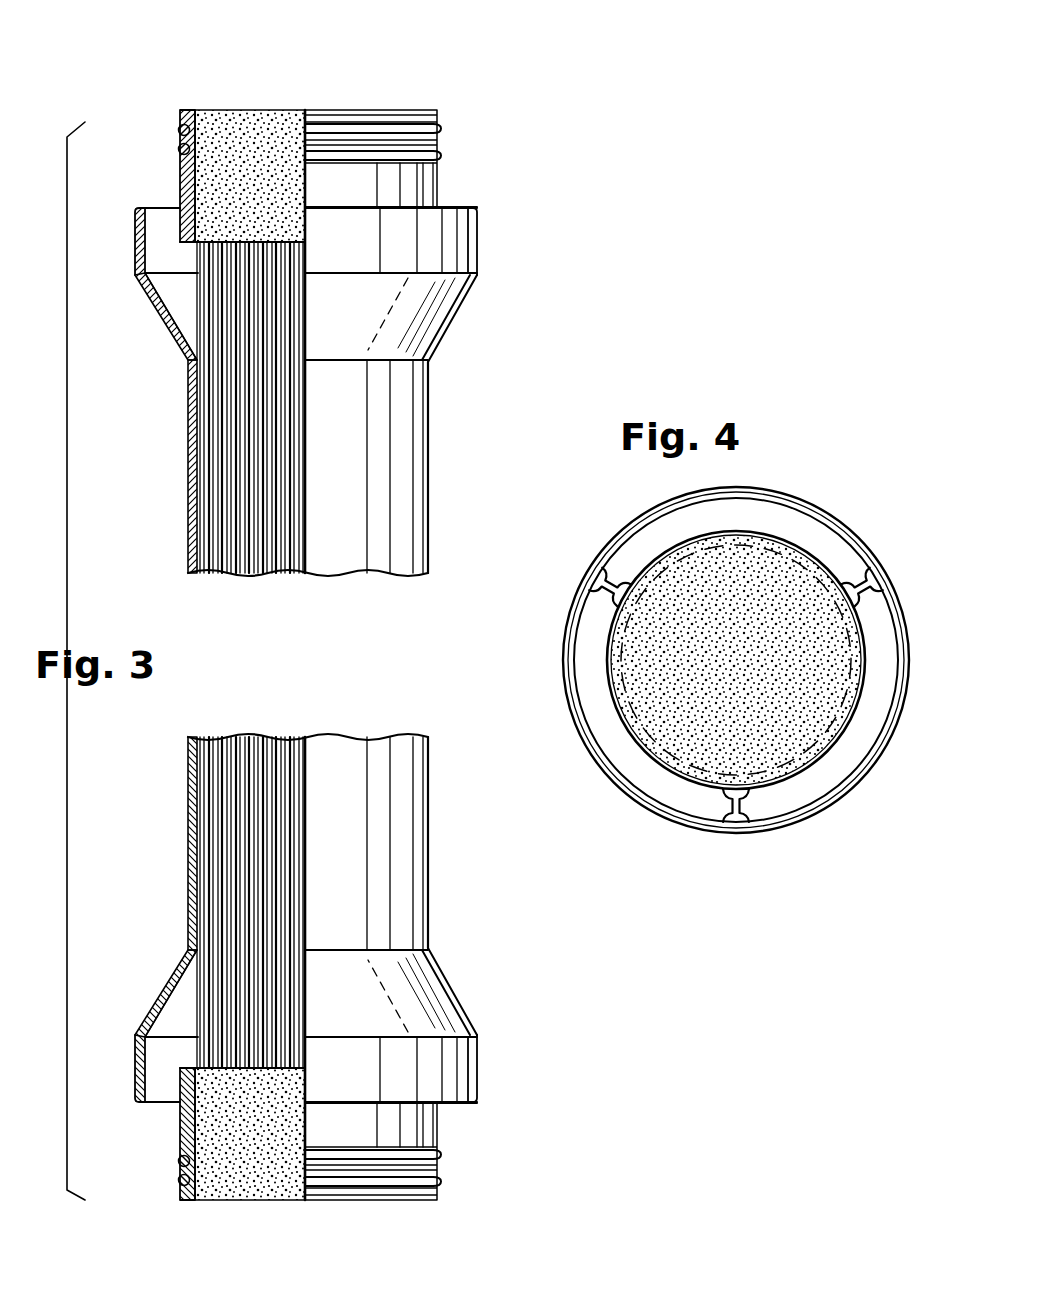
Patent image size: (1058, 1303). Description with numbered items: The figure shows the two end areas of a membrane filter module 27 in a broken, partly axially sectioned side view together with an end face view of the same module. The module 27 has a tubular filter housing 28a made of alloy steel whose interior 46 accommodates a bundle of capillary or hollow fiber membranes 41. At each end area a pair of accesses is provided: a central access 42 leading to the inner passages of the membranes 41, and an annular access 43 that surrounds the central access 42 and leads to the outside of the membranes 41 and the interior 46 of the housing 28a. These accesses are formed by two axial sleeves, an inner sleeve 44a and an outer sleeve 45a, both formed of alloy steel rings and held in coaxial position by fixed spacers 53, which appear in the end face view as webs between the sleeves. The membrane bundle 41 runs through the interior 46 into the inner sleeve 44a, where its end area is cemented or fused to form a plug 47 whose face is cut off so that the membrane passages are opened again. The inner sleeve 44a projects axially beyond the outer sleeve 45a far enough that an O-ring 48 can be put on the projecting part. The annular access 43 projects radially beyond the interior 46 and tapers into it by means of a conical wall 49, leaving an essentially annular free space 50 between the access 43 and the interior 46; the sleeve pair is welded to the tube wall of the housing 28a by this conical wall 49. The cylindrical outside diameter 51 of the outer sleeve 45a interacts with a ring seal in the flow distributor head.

In FIG. 3, the membrane filter module 27 is at (343, 597).
In FIG. 3, the tubular filter housing 28a is at (434, 420).
In FIG. 4, the tubular filter housing 28a is at (772, 486).
In FIG. 3, the capillary or hollow fiber membranes 41 is at (236, 575).
In FIG. 3, the central access 42 is at (366, 106).
In FIG. 4, the central access 42 is at (690, 575).
In FIG. 3, the annular access 43 is at (160, 207).
In FIG. 4, the annular access 43 is at (808, 536).
In FIG. 3, the inner sleeve 44a is at (432, 172).
In FIG. 4, the inner sleeve 44a is at (830, 745).
In FIG. 3, the outer sleeve 45a is at (472, 216).
In FIG. 4, the outer sleeve 45a is at (562, 694).
In FIG. 3, the interior of the tubular filter housing 46 is at (192, 460).
In FIG. 3, the plug 47 is at (230, 124).
In FIG. 4, the plug 47 is at (702, 748).
In FIG. 3, the O-ring 48 is at (178, 149).
In FIG. 3, the conical wall 49 is at (178, 342).
In FIG. 3, the annular free space 50 is at (185, 300).
In FIG. 3, the cylindrical outside diameter 51 is at (480, 245).
In FIG. 4, the fixed spacers 53 is at (606, 577).